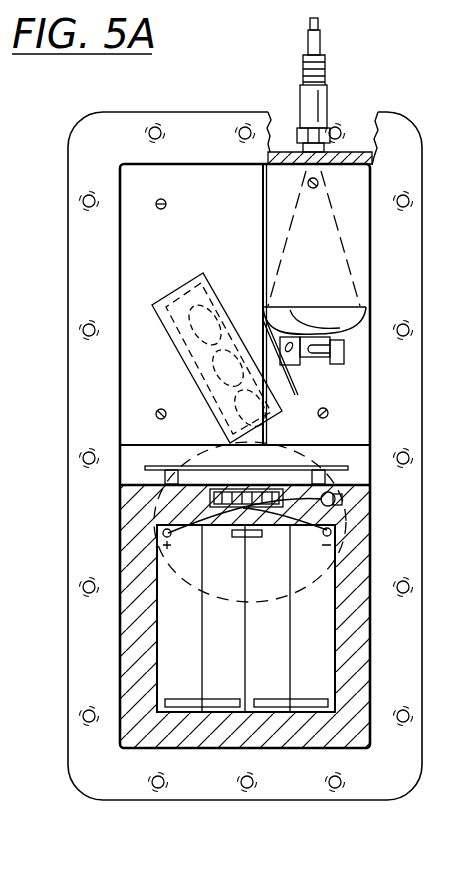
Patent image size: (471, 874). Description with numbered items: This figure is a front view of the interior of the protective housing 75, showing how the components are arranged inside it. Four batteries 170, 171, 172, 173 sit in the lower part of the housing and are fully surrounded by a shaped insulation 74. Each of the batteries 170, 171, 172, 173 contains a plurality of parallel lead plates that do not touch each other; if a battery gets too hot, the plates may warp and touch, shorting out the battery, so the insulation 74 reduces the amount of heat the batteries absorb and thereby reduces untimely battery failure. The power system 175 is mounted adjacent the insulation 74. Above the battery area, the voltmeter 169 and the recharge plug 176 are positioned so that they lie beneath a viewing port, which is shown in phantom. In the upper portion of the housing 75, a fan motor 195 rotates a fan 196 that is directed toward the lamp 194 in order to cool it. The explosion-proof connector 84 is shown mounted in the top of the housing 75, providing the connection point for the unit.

The shaped insulation 74 is at (120, 537).
The protective housing 75 is at (80, 366).
The explosion-proof connector 84 is at (305, 112).
The voltmeter 169 is at (210, 497).
The battery 170 is at (202, 618).
The battery 171 is at (226, 618).
The battery 172 is at (289, 618).
The battery 173 is at (314, 620).
The power system 175 is at (146, 468).
The recharge plug 176 is at (340, 492).
The lamp 194 is at (312, 305).
The fan motor 195 is at (196, 388).
The fan 196 is at (210, 318).